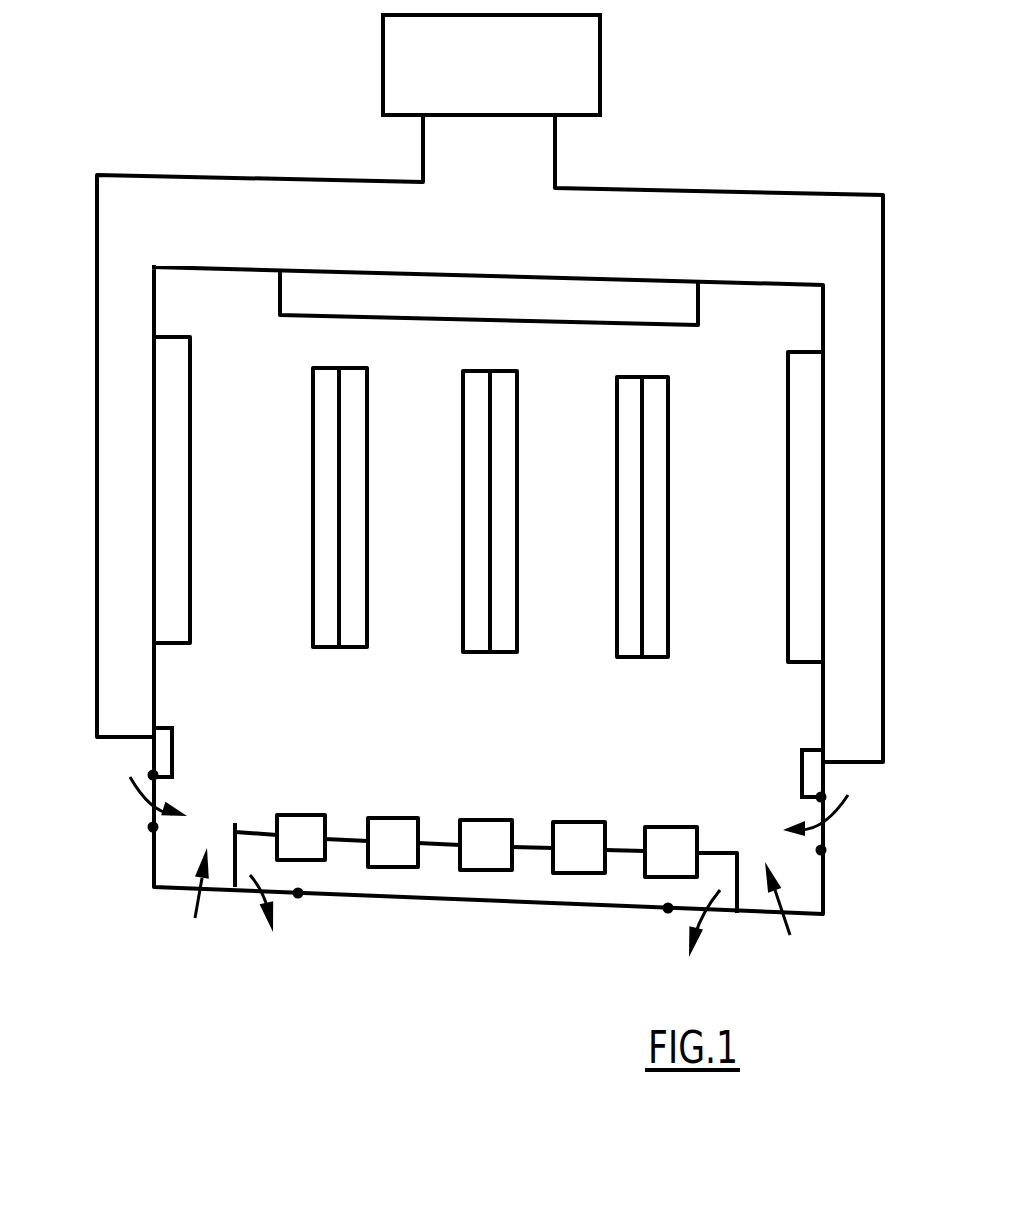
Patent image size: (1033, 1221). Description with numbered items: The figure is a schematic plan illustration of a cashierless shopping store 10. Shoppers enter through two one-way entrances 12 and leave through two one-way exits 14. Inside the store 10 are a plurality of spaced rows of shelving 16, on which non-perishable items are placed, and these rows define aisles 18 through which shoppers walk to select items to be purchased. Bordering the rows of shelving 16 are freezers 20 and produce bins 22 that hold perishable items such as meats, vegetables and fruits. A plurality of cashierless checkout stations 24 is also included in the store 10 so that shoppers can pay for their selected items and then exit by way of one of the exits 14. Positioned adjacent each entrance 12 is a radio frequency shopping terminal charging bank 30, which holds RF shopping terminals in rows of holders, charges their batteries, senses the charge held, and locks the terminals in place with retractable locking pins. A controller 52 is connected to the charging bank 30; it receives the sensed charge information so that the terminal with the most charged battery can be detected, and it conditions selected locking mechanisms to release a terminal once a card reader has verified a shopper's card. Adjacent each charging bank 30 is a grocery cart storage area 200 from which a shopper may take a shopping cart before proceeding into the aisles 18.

The cashierless shopping store 10 is at (826, 160).
The controller 52 is at (600, 53).
The freezers 20 is at (490, 298).
The produce bins 22 is at (797, 497).
The shelving 16 is at (658, 377).
The aisles 18 is at (416, 418).
The cashierless checkout stations 24 is at (392, 816).
The RF shopping terminal charging bank 30 is at (173, 747).
The one-way entrances 12 is at (150, 800).
The one-way exits 14 is at (285, 897).
The grocery cart storage area 200 is at (492, 916).